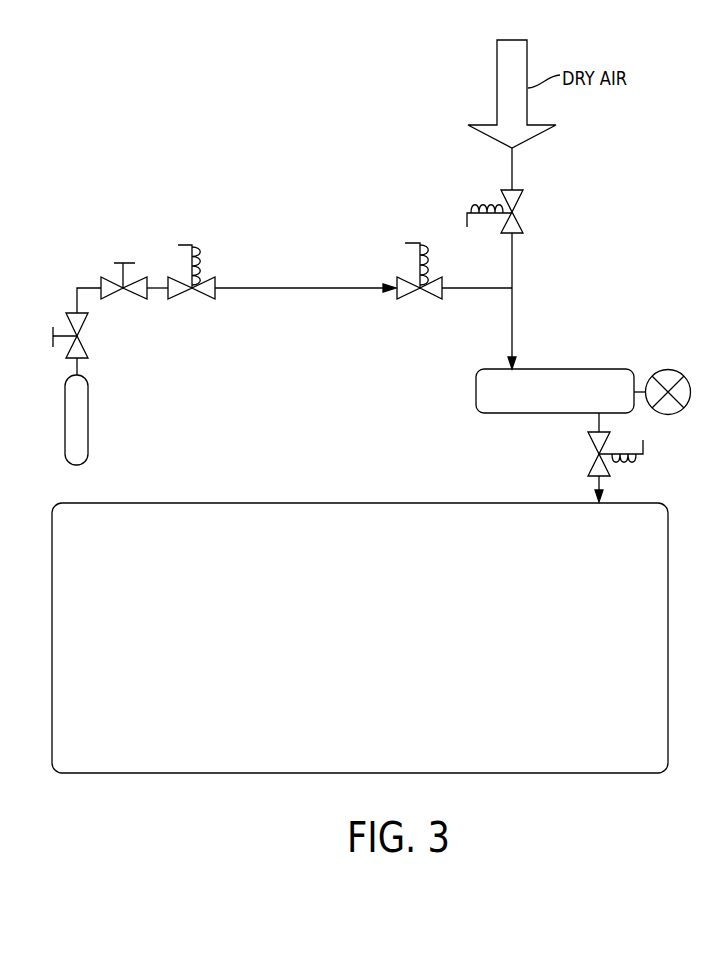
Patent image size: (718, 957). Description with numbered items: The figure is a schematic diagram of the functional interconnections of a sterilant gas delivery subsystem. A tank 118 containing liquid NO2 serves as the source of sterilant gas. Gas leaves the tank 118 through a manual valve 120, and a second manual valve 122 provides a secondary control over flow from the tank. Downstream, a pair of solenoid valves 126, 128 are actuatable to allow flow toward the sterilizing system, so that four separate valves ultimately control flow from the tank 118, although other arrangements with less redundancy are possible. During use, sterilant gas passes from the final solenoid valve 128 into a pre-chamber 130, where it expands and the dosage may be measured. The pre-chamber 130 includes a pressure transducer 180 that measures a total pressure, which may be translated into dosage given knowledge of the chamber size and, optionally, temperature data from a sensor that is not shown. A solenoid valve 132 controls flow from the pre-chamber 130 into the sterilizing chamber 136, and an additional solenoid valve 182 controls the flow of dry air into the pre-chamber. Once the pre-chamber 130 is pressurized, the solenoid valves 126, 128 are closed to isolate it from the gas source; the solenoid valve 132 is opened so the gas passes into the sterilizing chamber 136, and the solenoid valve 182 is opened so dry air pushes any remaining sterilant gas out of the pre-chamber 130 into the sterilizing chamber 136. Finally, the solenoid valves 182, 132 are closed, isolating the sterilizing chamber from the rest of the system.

The tank 118 is at (88, 420).
The manual valve 120 is at (88, 350).
The manual valve 122 is at (128, 270).
The solenoid valve 126 is at (208, 276).
The solenoid valve 128 is at (404, 278).
The pre-chamber 130 is at (568, 369).
The solenoid valve 132 is at (590, 466).
The sterilizing chamber 136 is at (374, 503).
The pressure transducer 180 is at (672, 370).
The solenoid valve 182 is at (522, 196).